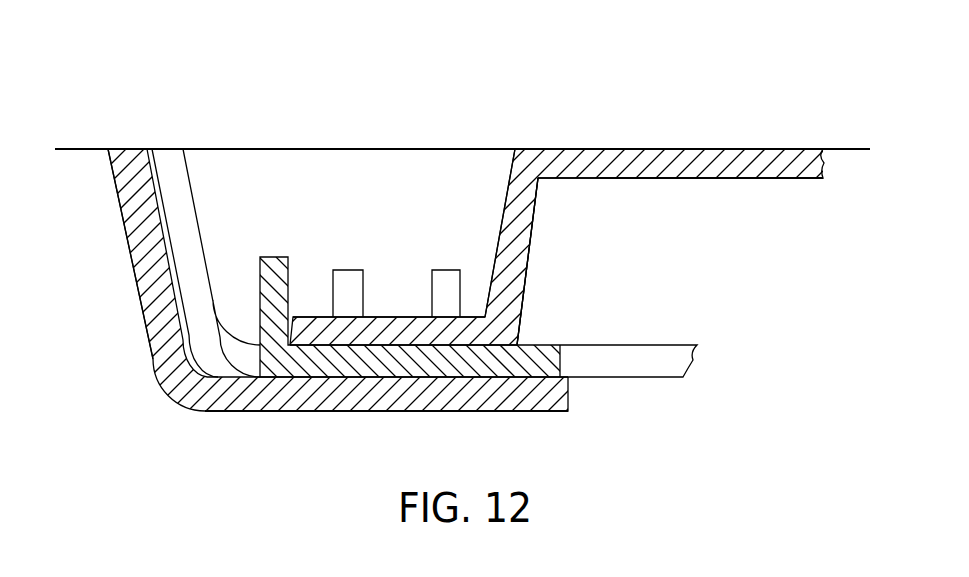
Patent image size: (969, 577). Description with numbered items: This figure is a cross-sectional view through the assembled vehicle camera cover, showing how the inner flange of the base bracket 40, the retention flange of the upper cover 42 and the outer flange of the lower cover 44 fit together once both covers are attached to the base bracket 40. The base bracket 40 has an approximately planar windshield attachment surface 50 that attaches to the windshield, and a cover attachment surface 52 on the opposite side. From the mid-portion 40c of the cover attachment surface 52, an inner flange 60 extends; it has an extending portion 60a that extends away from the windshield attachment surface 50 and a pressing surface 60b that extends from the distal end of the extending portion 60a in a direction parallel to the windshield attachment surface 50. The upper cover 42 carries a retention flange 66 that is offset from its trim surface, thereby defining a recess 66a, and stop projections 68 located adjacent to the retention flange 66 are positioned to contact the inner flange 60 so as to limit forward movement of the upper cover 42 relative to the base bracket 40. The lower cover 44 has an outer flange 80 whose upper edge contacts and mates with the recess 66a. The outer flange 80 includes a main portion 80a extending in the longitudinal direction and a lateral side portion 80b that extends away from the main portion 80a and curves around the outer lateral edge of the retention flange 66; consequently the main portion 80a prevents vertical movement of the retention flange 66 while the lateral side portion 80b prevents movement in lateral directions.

The base bracket 40 is at (748, 148).
The mid-portion 40c is at (795, 164).
The upper cover 42 is at (193, 190).
The lower cover 44 is at (277, 412).
The windshield attachment surface 50 is at (616, 148).
The cover attachment surface 52 is at (717, 179).
The inner flange 60 is at (527, 249).
The extending portion 60a is at (521, 211).
The pressing surface 60b is at (412, 352).
The retention flange 66 is at (534, 362).
The recess 66a is at (193, 350).
The stop projection 68 is at (445, 294).
The outer flange 80 is at (571, 392).
The main portion 80a is at (505, 392).
The lateral side portion 80b is at (148, 266).